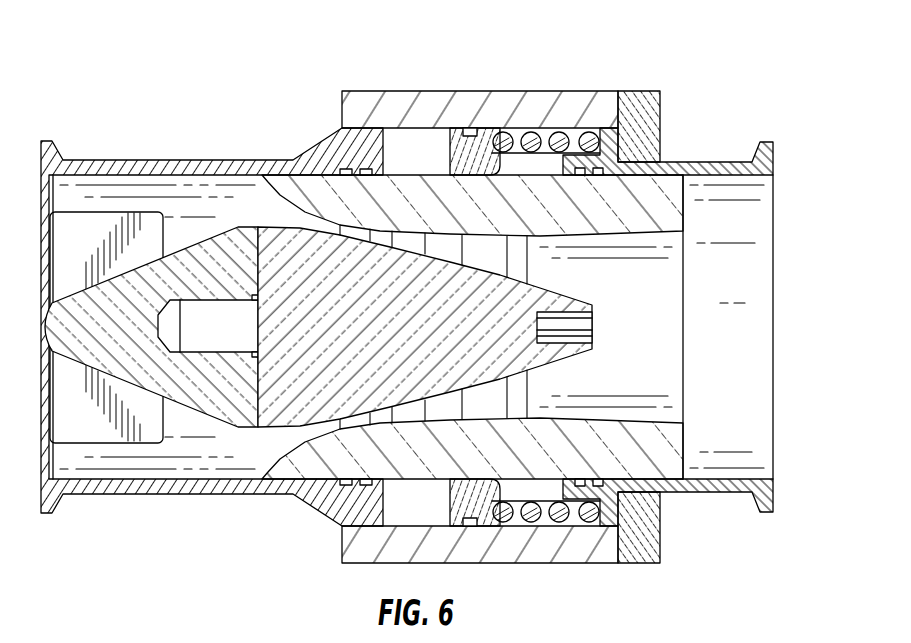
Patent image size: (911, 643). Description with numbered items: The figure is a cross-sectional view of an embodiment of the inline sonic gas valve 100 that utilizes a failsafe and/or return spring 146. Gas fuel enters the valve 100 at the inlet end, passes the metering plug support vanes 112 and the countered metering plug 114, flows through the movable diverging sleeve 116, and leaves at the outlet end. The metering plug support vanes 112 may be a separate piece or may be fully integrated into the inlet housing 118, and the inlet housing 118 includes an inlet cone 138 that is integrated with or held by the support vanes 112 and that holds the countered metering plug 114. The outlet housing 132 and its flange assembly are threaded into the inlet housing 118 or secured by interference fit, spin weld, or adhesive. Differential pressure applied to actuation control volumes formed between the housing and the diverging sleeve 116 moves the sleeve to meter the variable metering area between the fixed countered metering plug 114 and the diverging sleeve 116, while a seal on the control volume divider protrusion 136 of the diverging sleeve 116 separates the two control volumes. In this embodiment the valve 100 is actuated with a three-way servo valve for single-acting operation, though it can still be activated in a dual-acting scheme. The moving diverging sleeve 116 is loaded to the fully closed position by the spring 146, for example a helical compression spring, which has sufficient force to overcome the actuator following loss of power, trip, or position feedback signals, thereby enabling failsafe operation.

The inline sonic gas valve 100 is at (120, 54).
The metering plug support vanes 112 is at (75, 237).
The countered metering plug 114 is at (327, 370).
The movable diverging sleeve 116 is at (650, 213).
The inlet housing 118 is at (165, 483).
The outlet housing 132 is at (752, 445).
The control volume divider protrusion 136 is at (462, 155).
The inlet cone 138 is at (218, 268).
The failsafe and/or return spring 146 is at (531, 137).